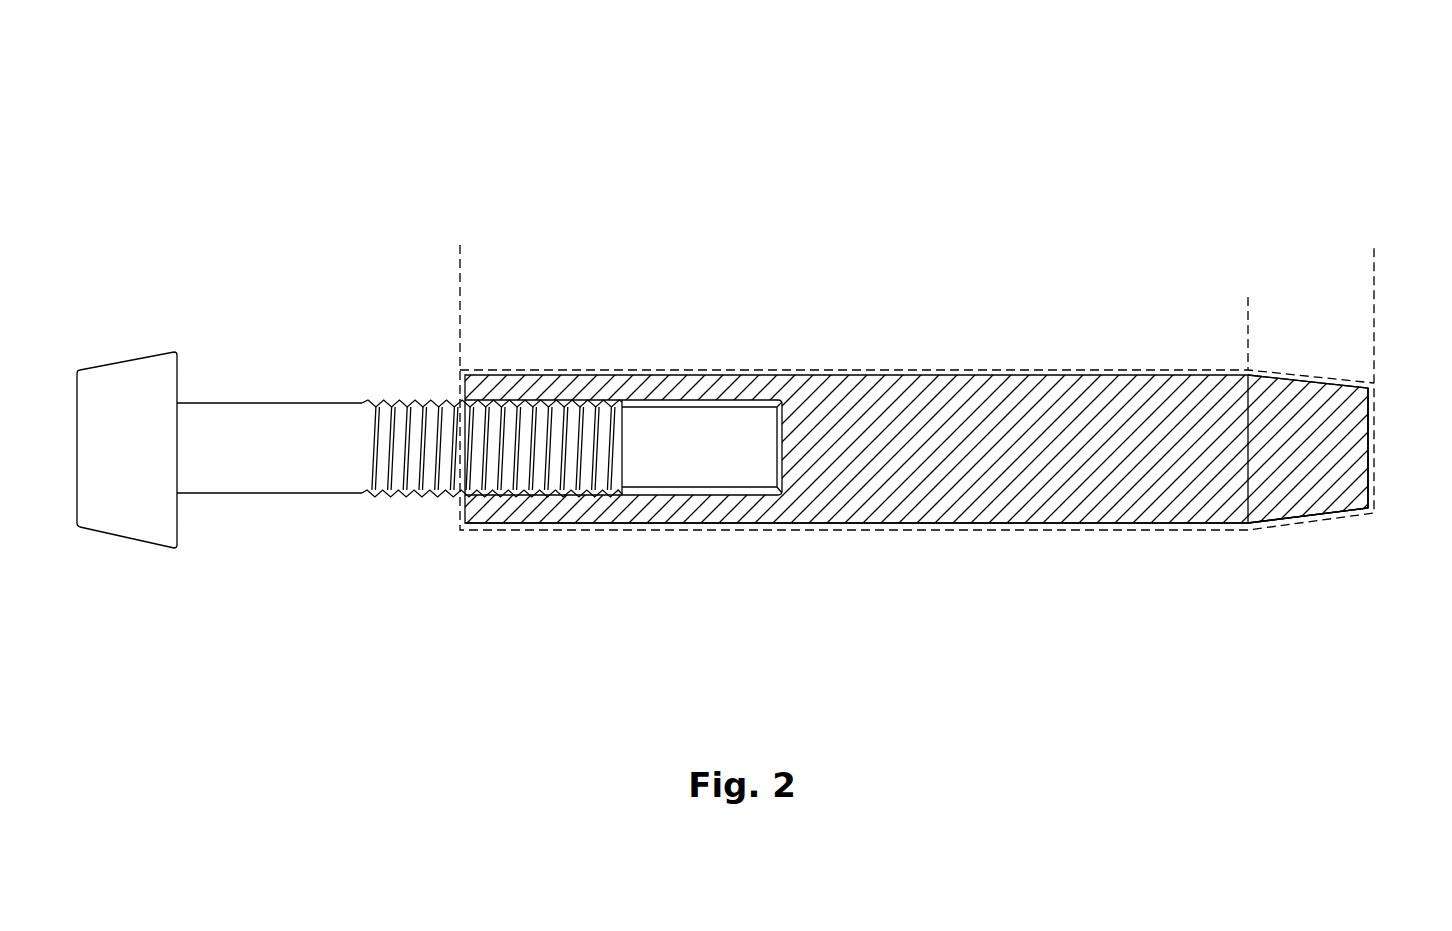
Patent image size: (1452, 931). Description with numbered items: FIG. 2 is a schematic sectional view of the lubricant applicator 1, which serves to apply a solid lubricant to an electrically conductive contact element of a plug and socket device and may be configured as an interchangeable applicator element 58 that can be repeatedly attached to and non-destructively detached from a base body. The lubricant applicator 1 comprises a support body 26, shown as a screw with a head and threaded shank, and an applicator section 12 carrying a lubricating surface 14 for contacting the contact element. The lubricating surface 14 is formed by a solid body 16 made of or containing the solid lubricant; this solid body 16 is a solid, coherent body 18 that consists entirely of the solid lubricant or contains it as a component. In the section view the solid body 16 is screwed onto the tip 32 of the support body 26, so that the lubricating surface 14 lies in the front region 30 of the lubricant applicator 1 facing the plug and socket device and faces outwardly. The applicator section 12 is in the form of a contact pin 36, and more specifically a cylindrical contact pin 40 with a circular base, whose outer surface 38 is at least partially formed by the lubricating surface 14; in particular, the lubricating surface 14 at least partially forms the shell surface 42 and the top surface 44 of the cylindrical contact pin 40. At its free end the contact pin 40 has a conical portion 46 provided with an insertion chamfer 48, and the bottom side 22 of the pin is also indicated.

The lubricant applicator 1 is at (760, 377).
The interchangeable applicator element 58 is at (410, 108).
The applicator section 12 is at (952, 434).
The front region 30 is at (460, 245).
The lubricating surface 14 is at (917, 387).
The outer surface 38 is at (917, 387).
The shell surface 42 is at (1012, 372).
The solid body 16 is at (916, 410).
The solid, coherent body 18 is at (873, 414).
The bottom side of insert 22 is at (955, 527).
The support body 26 is at (280, 453).
The tip 32 is at (598, 453).
The contact pin 36 is at (1345, 475).
The cylindrical contact pin 40 is at (1267, 605).
The top surface 44 is at (1368, 432).
The conical portion 46 is at (1248, 297).
The insertion chamfer 48 is at (1308, 520).